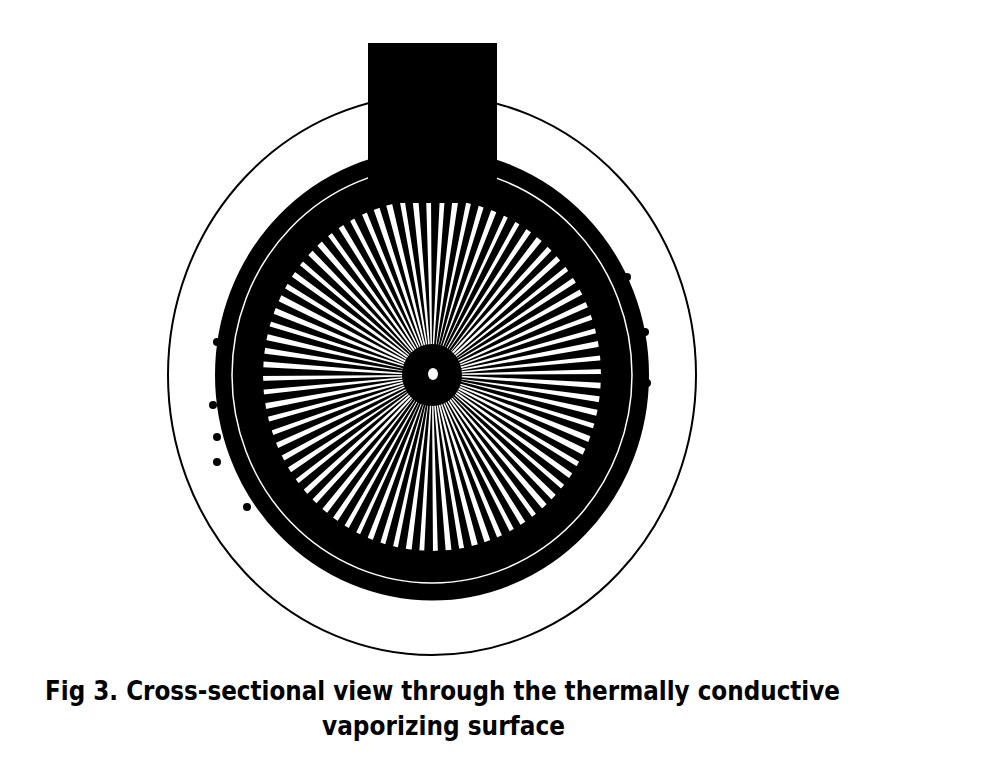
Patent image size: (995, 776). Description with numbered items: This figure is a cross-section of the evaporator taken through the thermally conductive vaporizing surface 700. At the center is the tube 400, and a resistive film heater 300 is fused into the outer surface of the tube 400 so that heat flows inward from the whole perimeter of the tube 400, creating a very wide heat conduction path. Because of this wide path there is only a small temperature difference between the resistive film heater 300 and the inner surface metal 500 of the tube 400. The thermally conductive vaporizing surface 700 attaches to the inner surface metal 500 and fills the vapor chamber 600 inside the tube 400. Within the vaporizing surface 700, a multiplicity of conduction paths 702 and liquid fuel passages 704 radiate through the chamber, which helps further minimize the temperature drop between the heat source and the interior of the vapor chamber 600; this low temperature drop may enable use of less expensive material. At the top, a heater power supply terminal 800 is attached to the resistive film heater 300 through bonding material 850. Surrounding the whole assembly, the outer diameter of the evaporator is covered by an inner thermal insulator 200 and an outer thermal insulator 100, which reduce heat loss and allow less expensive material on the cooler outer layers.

The outer thermal insulator 100 is at (444, 375).
The inner thermal insulator 200 is at (588, 215).
The resistive film heater 300 is at (618, 258).
The tube 400 is at (622, 425).
The inner surface metal 500 is at (597, 485).
The vapor chamber 600 is at (557, 537).
The thermally conductive vaporizing surface 700 is at (485, 411).
The conduction paths 702 is at (627, 277).
The liquid fuel passages 704 is at (645, 332).
The heater power supply terminal 800 is at (356, 65).
The bonding material 850 is at (270, 232).